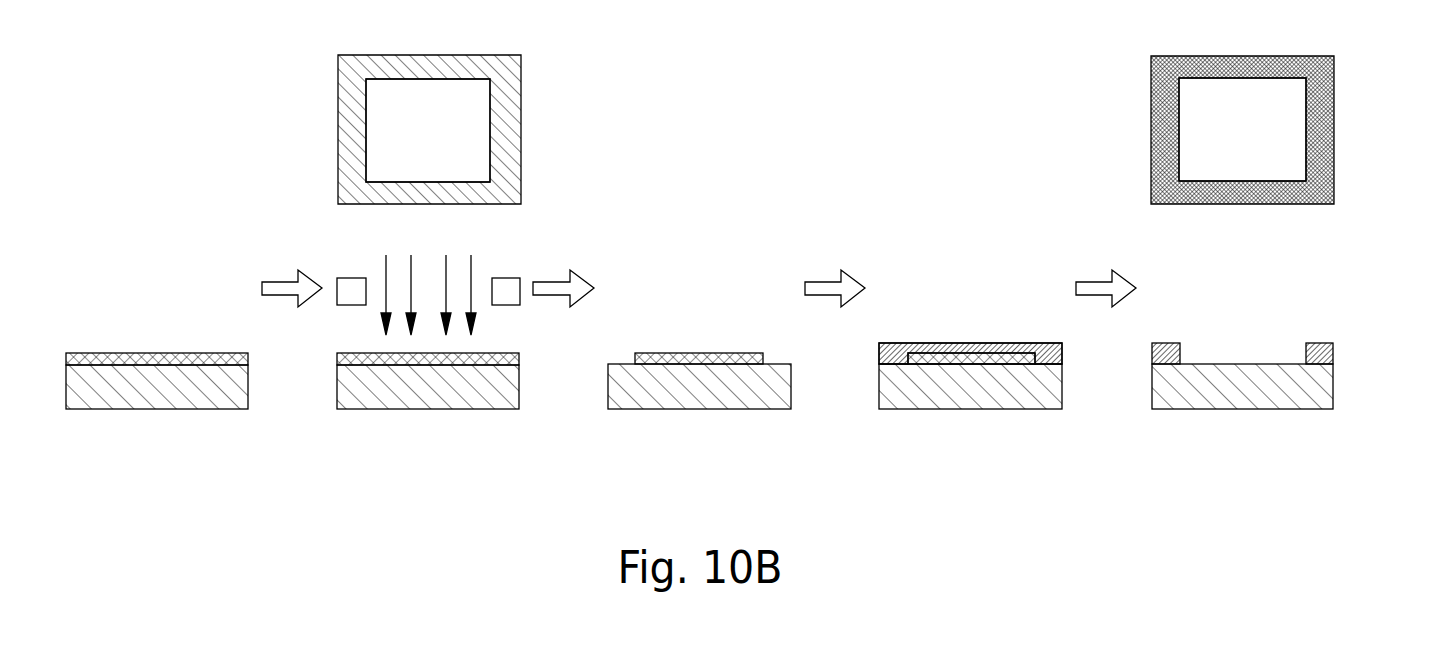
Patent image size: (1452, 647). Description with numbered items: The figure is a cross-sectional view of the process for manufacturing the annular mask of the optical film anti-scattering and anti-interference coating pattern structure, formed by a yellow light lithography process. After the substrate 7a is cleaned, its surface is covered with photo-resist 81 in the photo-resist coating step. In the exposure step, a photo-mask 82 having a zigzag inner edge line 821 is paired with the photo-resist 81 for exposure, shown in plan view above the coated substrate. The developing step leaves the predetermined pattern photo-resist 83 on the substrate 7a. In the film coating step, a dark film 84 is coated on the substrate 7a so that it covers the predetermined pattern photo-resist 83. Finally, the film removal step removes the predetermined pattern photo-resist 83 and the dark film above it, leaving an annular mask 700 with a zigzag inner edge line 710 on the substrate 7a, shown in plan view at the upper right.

The substrate 7a is at (148, 409).
The photo-resist 81 is at (146, 353).
The photo-mask 82 is at (346, 118).
The zigzag inner edge line 821 is at (441, 78).
The predetermined pattern photo-resist 83 is at (702, 353).
The dark film 84 is at (923, 348).
The annular mask 700 is at (1323, 118).
The zigzag inner edge line 710 is at (1245, 78).